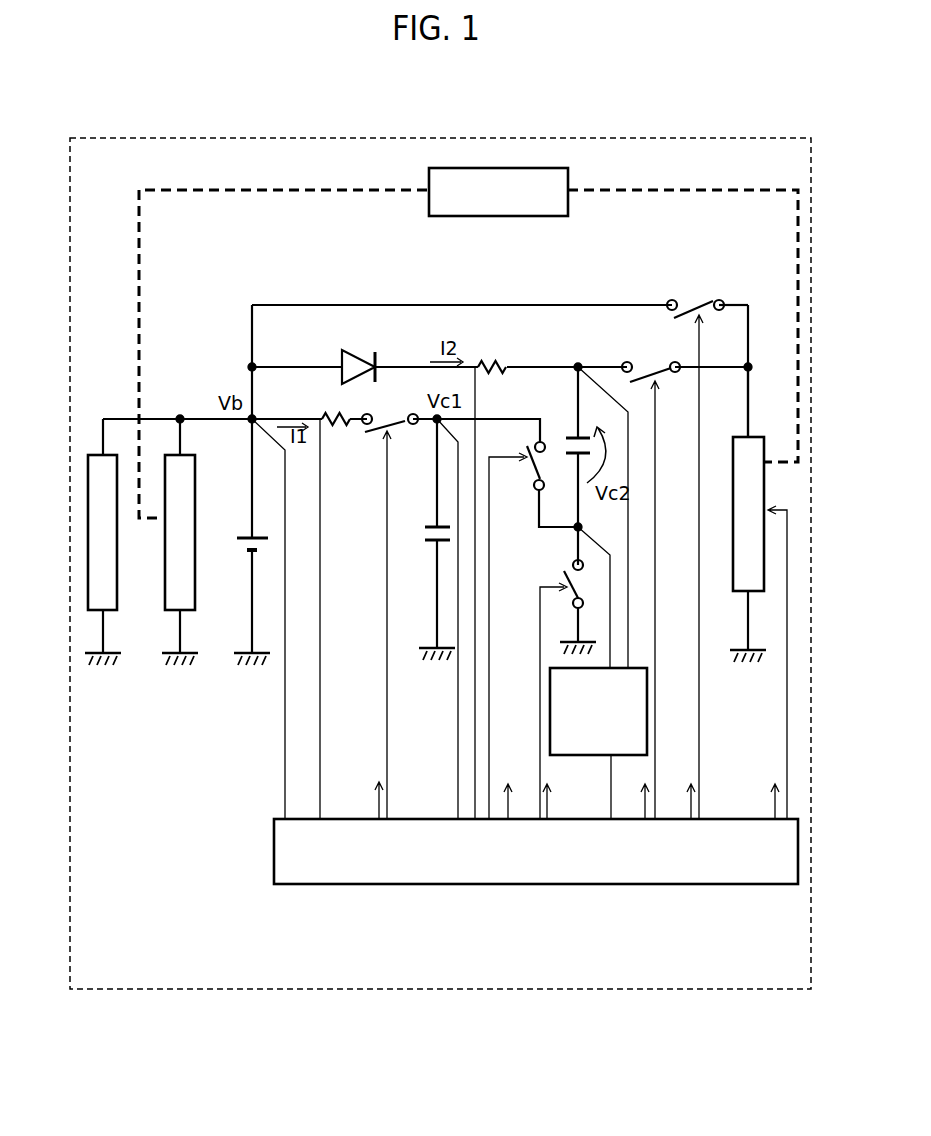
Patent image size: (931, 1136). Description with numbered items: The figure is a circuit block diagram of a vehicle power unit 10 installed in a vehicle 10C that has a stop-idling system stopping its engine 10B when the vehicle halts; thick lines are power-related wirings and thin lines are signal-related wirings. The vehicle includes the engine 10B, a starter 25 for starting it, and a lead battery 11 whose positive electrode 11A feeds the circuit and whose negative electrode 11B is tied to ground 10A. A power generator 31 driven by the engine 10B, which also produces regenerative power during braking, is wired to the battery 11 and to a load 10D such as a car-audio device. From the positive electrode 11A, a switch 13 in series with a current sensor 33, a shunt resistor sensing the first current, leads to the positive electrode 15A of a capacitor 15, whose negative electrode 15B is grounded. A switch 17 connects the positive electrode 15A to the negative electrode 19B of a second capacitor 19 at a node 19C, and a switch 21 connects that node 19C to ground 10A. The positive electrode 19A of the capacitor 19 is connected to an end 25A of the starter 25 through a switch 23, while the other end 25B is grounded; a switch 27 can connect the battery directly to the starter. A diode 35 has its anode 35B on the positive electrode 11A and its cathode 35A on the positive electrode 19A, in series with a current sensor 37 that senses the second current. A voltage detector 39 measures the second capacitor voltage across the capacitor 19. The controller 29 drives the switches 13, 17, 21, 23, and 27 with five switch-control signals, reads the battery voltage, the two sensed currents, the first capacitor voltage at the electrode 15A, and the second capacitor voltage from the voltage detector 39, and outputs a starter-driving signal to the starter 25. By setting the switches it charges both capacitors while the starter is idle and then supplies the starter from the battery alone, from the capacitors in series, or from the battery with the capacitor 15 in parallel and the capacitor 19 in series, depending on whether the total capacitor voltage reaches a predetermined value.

The vehicle power unit 10 is at (625, 284).
The ground 10A is at (443, 655).
The engine 10B is at (568, 181).
The vehicle 10C is at (677, 137).
The load 10D is at (117, 575).
The battery 11 is at (238, 542).
The positive electrode of battery 11A is at (252, 533).
The negative electrode of battery 11B is at (250, 553).
The switch 13 is at (386, 419).
The capacitor 15 is at (423, 563).
The positive electrode of capacitor 15A is at (435, 523).
The negative electrode of capacitor 15B is at (435, 542).
The switch 17 is at (528, 470).
The capacitor 19 is at (587, 466).
The positive electrode of capacitor 19A is at (585, 433).
The negative electrode of capacitor 19B is at (567, 463).
The node 19C is at (583, 527).
The switch 21 is at (562, 572).
The switch 23 is at (655, 362).
The starter 25 is at (747, 593).
The end of starter 25A is at (738, 435).
The end of starter 25B is at (747, 593).
The switch 27 is at (699, 299).
The controller 29 is at (608, 884).
The power generator 31 is at (195, 575).
The current sensor 33 is at (332, 410).
The diode 35 is at (363, 349).
The cathode of diode 35A is at (380, 357).
The anode of diode 35B is at (342, 361).
The current sensor 37 is at (489, 355).
The voltage detector 39 is at (647, 707).